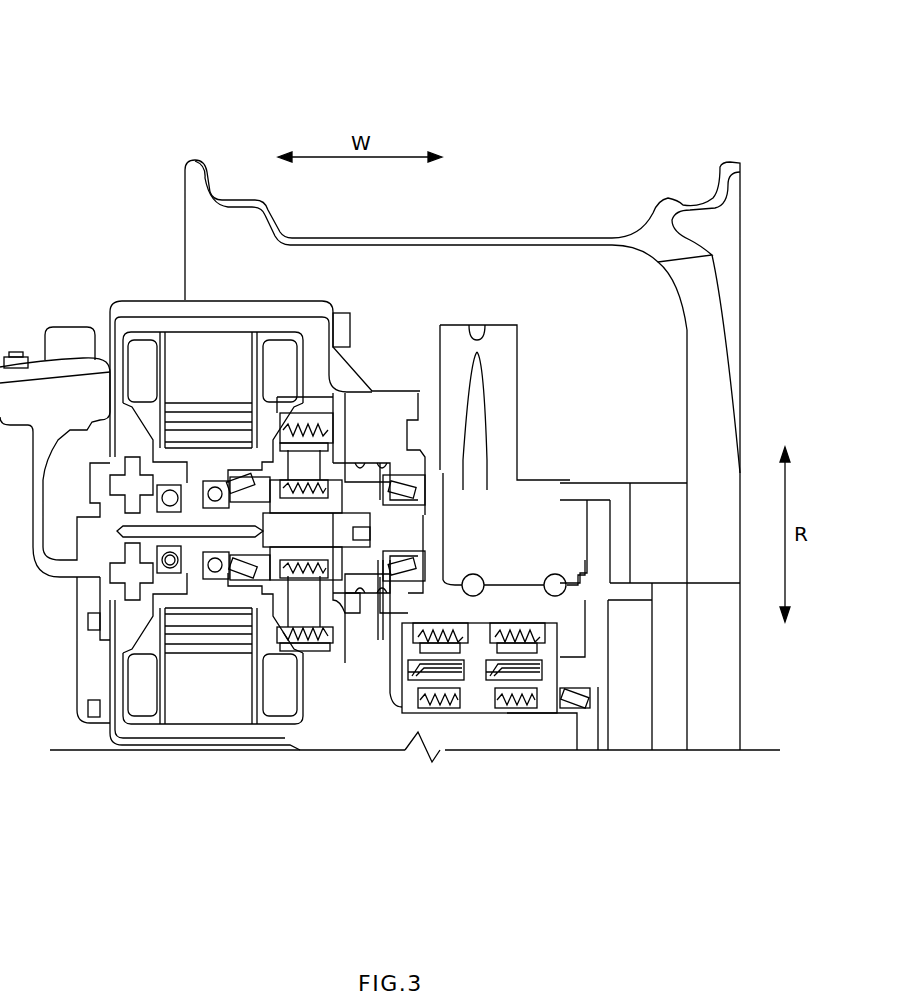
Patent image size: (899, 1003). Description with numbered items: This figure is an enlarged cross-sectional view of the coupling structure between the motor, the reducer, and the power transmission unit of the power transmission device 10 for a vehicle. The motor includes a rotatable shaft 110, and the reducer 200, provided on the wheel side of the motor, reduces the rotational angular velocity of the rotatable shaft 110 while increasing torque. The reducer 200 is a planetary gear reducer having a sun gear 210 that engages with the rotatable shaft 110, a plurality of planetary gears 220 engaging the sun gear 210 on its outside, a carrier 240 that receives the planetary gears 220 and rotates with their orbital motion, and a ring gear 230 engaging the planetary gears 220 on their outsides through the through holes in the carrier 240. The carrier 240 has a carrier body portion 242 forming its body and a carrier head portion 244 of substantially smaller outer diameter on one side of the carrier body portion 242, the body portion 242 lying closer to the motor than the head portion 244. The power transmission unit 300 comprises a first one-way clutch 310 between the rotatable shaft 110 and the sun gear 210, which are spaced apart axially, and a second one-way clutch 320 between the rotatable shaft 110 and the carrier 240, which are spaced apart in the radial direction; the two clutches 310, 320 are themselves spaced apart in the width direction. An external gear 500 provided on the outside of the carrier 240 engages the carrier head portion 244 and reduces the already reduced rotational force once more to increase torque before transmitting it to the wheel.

The power transmission device 10 is at (84, 110).
The rotatable shaft 110 is at (268, 540).
The reducer 200 is at (200, 12).
The sun gear 210 is at (291, 490).
The planetary gears 220 is at (318, 485).
The ring gear 230 is at (312, 418).
The carrier 240 is at (465, 838).
The carrier body portion 242 is at (322, 617).
The carrier head portion 244 is at (370, 600).
The power transmission unit 300 is at (563, 120).
The first one-way clutch 310 is at (313, 553).
The second one-way clutch 320 is at (362, 510).
The external gear 500 is at (375, 475).